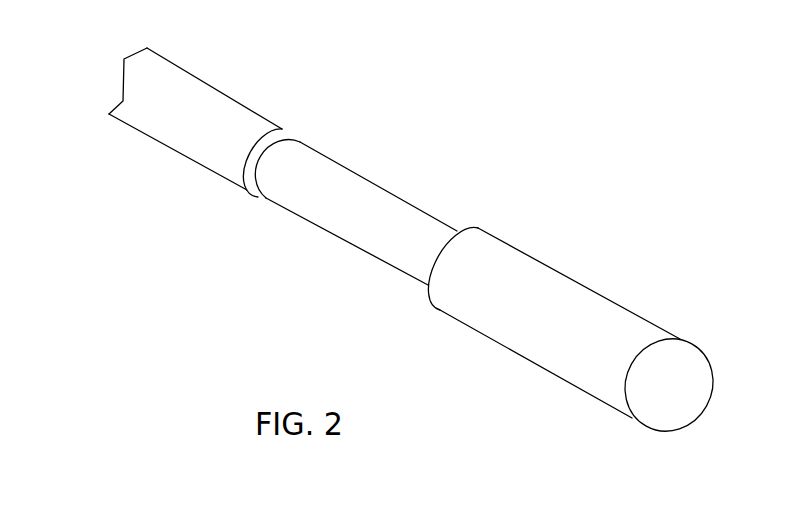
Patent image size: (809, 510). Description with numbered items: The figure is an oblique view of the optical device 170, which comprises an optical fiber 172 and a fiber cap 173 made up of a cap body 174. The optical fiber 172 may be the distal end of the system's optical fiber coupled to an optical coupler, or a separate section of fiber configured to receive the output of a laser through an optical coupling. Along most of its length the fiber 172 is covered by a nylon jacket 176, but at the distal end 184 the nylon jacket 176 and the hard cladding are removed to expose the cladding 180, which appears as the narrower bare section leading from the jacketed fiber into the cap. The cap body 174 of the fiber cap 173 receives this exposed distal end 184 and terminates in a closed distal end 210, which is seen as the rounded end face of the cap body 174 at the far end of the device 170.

The optical device 170 is at (438, 240).
The optical fiber 172 is at (195, 115).
The nylon jacket 176 is at (158, 133).
The cladding 180 is at (356, 216).
The distal end 184 is at (360, 237).
The fiber cap 173 is at (599, 335).
The cap body 174 is at (625, 315).
The closed distal end 210 is at (697, 393).